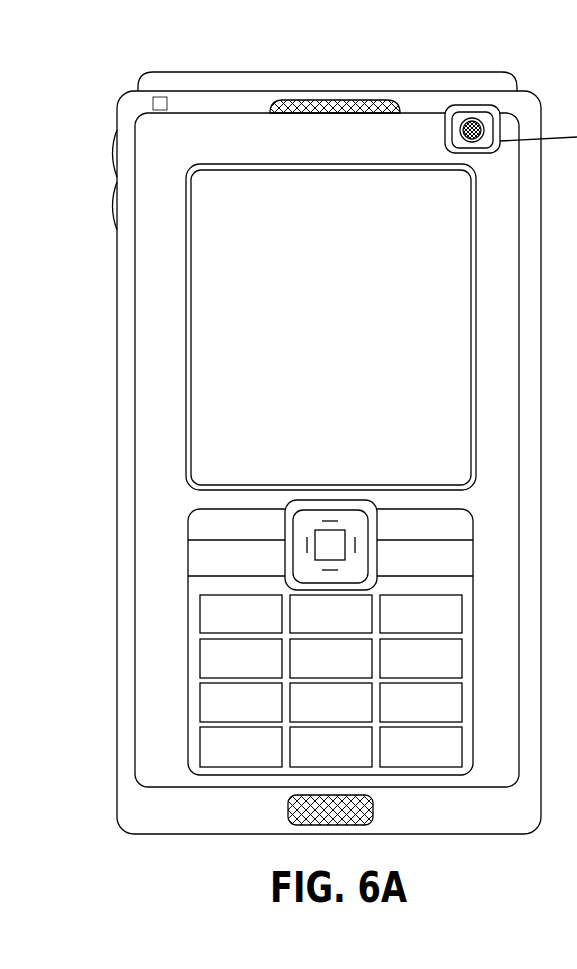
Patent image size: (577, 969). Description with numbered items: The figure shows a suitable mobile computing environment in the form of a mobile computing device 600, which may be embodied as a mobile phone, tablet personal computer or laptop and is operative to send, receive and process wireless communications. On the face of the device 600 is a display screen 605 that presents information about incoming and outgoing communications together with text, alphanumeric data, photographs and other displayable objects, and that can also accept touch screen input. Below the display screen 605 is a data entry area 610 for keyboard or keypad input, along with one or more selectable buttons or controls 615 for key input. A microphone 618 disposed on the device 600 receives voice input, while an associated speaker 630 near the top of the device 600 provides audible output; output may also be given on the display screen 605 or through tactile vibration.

The mobile computing device 600 is at (110, 97).
The display screen 605 is at (223, 312).
The data entry area 610 is at (190, 554).
The selectable buttons or controls 615 is at (213, 657).
The microphone 618 is at (291, 803).
The speaker 630 is at (376, 106).